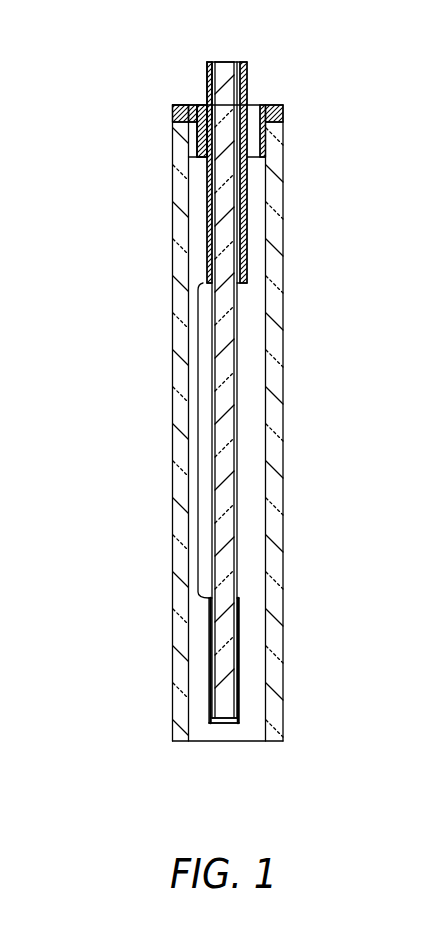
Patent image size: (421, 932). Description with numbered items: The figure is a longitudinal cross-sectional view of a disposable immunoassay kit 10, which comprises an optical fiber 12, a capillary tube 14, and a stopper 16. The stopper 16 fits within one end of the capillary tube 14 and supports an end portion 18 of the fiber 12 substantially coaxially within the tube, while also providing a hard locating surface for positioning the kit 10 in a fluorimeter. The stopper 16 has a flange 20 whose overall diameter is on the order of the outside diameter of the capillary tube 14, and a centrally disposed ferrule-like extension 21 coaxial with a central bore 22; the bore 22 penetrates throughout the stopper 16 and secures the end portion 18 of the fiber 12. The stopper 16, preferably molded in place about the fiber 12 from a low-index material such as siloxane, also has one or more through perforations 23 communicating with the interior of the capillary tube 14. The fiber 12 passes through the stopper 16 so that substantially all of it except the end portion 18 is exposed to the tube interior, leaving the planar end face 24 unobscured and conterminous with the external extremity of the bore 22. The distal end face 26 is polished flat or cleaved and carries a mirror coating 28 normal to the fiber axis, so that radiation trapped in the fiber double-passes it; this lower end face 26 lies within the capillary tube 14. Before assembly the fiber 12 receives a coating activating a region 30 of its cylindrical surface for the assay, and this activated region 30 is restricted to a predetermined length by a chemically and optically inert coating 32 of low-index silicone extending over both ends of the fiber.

The immunoassay kit 10 is at (100, 743).
The optical fiber 12 is at (232, 547).
The capillary tube 14 is at (276, 288).
The stopper 16 is at (283, 111).
The end portion 18 is at (305, 60).
The flange 20 is at (172, 104).
The ferrule-like extension 21 is at (206, 78).
The central bore 22 is at (211, 78).
The through perforations 23 is at (197, 106).
The end face 24 is at (231, 62).
The end face 26 is at (227, 724).
The mirror coating 28 is at (220, 724).
The activated region 30 is at (198, 428).
The inert coating 32 is at (190, 282).